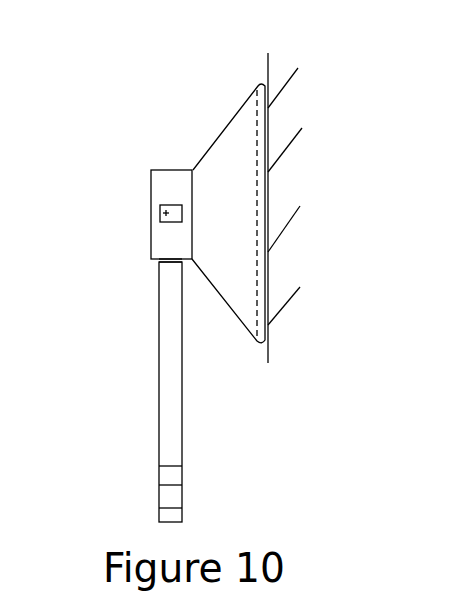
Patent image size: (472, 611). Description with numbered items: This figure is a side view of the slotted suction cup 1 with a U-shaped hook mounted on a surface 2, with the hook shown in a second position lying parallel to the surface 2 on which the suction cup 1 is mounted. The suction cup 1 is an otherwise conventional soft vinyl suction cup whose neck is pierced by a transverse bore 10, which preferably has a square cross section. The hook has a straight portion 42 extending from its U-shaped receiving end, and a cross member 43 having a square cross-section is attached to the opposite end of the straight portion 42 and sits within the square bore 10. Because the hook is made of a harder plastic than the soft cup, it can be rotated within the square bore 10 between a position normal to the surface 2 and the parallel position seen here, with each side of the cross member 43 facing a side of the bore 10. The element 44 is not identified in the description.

The slotted suction cup 1 is at (200, 122).
The surface 2 is at (271, 70).
The transverse bore 10 is at (162, 205).
The straight portion 42 is at (165, 262).
The cross member 43 is at (165, 213).
The strip / holder 44 is at (168, 432).